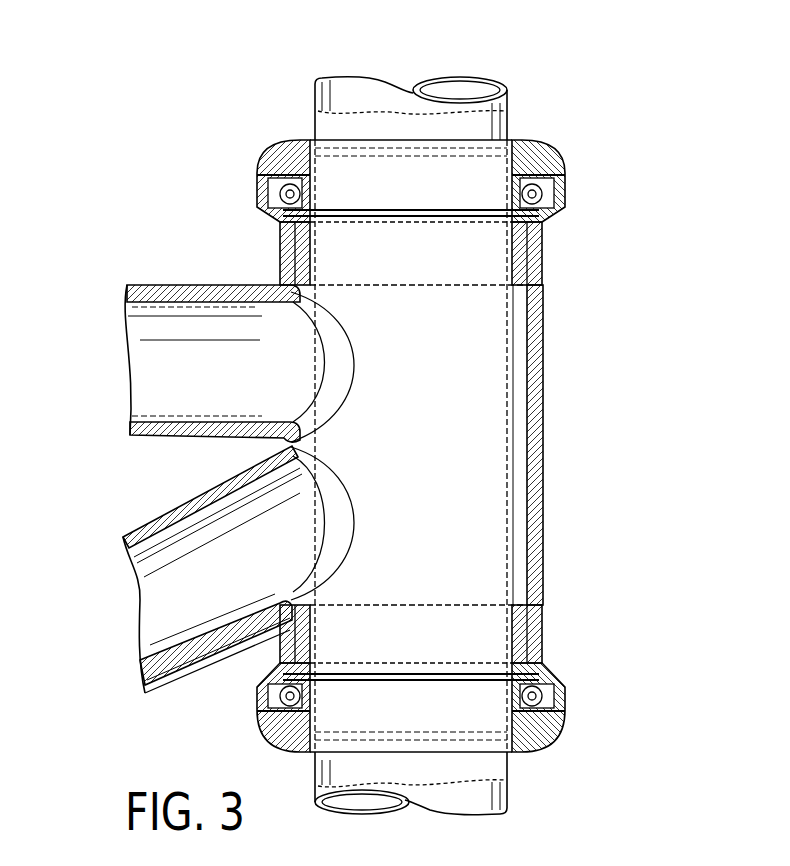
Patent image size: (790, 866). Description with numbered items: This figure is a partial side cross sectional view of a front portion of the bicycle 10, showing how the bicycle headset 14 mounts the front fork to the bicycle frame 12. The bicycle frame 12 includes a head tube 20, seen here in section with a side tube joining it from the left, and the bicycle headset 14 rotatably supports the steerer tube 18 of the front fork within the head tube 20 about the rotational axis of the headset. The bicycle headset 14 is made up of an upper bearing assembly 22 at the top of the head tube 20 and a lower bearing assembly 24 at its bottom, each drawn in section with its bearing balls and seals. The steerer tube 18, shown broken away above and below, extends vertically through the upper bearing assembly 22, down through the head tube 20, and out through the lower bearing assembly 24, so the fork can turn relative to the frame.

The bicycle 10 is at (114, 160).
The bicycle frame 12 is at (162, 278).
The bicycle headset 14 is at (662, 337).
The steerer tube 18 is at (517, 102).
The head tube 20 is at (280, 260).
The upper bearing assembly 22 is at (562, 226).
The lower bearing assembly 24 is at (566, 672).